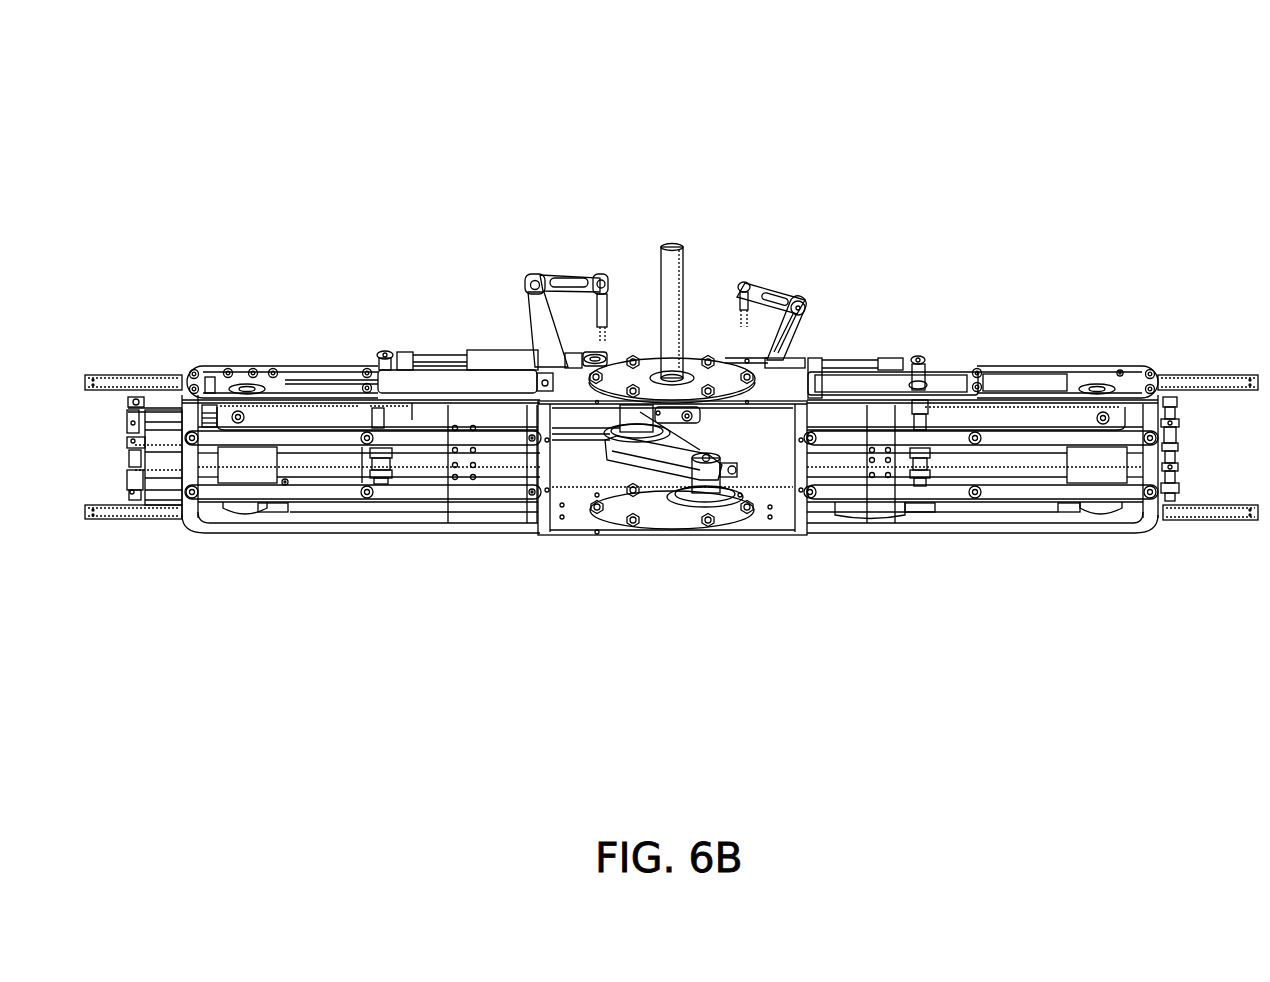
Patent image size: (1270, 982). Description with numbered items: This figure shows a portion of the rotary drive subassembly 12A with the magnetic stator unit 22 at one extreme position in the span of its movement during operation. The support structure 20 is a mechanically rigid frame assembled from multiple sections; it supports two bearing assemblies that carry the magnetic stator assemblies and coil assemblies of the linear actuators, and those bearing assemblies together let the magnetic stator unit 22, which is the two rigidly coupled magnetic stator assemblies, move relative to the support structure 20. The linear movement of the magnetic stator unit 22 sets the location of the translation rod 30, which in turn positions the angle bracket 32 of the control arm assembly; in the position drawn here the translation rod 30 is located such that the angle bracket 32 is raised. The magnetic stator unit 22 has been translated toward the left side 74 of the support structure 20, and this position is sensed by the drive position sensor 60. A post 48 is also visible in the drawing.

The rotary drive subassembly 12A is at (231, 71).
The support structure 20 is at (1208, 370).
The magnetic stator unit 22 is at (1173, 437).
The translation rod 30 is at (850, 359).
The angle bracket 32 is at (787, 290).
The support post 48 is at (676, 278).
The drive position sensor 60 is at (505, 349).
The left side 74 is at (164, 558).